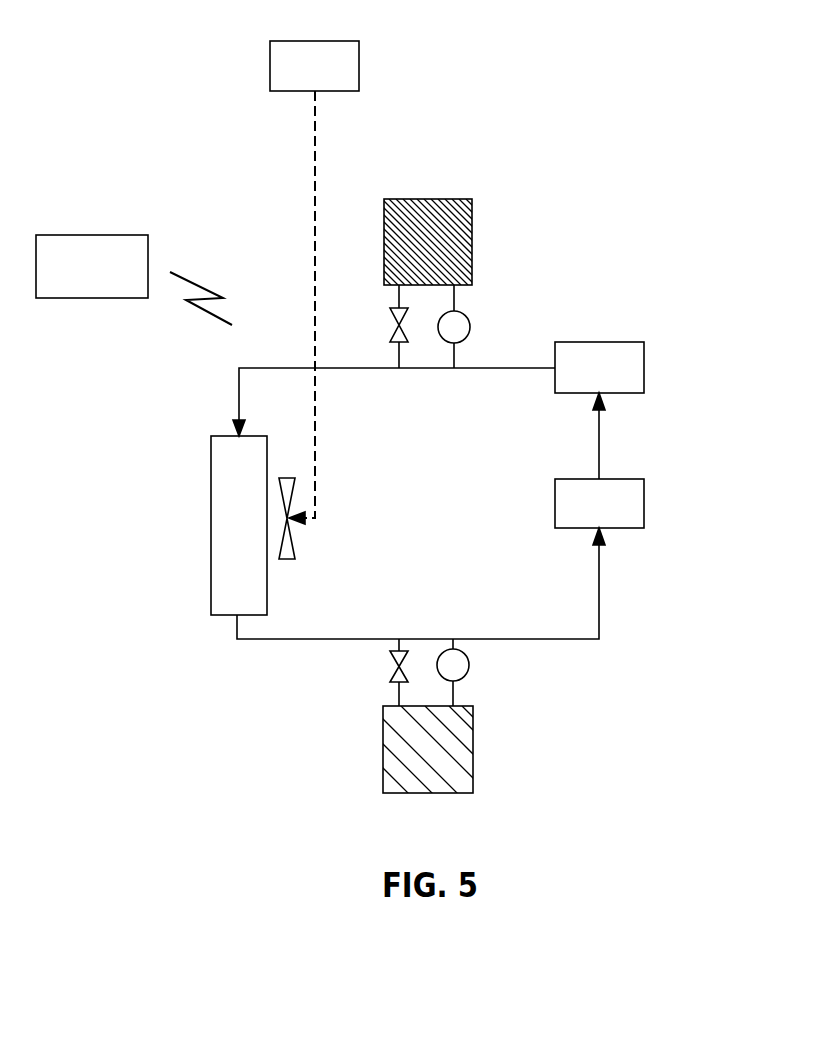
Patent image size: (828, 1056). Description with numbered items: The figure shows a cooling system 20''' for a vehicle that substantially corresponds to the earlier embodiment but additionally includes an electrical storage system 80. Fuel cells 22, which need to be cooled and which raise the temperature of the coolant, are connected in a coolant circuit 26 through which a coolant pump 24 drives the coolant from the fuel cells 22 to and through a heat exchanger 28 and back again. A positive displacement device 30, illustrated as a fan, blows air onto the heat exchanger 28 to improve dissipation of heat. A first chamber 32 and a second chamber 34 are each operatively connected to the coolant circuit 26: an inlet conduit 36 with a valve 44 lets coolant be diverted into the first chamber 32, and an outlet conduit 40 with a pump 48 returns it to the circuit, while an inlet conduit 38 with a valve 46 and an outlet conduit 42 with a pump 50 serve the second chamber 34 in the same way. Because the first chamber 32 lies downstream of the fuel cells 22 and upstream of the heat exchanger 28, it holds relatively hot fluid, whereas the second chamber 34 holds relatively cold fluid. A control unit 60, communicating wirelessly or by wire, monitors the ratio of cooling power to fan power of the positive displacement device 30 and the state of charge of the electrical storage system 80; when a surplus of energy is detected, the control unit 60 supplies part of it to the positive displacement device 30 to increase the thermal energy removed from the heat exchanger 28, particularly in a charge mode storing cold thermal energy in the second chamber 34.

The cooling system 20''' is at (373, 408).
The fuel cells 22 is at (644, 502).
The coolant pump 24 is at (644, 367).
The coolant circuit 26 is at (545, 367).
The heat exchanger 28 is at (211, 517).
The positive displacement device 30 is at (295, 543).
The first chamber 32 is at (428, 199).
The second chamber 34 is at (383, 748).
The inlet conduit 36 is at (398, 292).
The inlet conduit 38 is at (399, 693).
The outlet conduit 40 is at (454, 292).
The outlet conduit 42 is at (454, 693).
The valve 44 is at (392, 327).
The valve 46 is at (389, 657).
The pump 48 is at (470, 327).
The pump 50 is at (469, 665).
The control unit 60 is at (88, 233).
The electrical storage system 80 is at (359, 66).